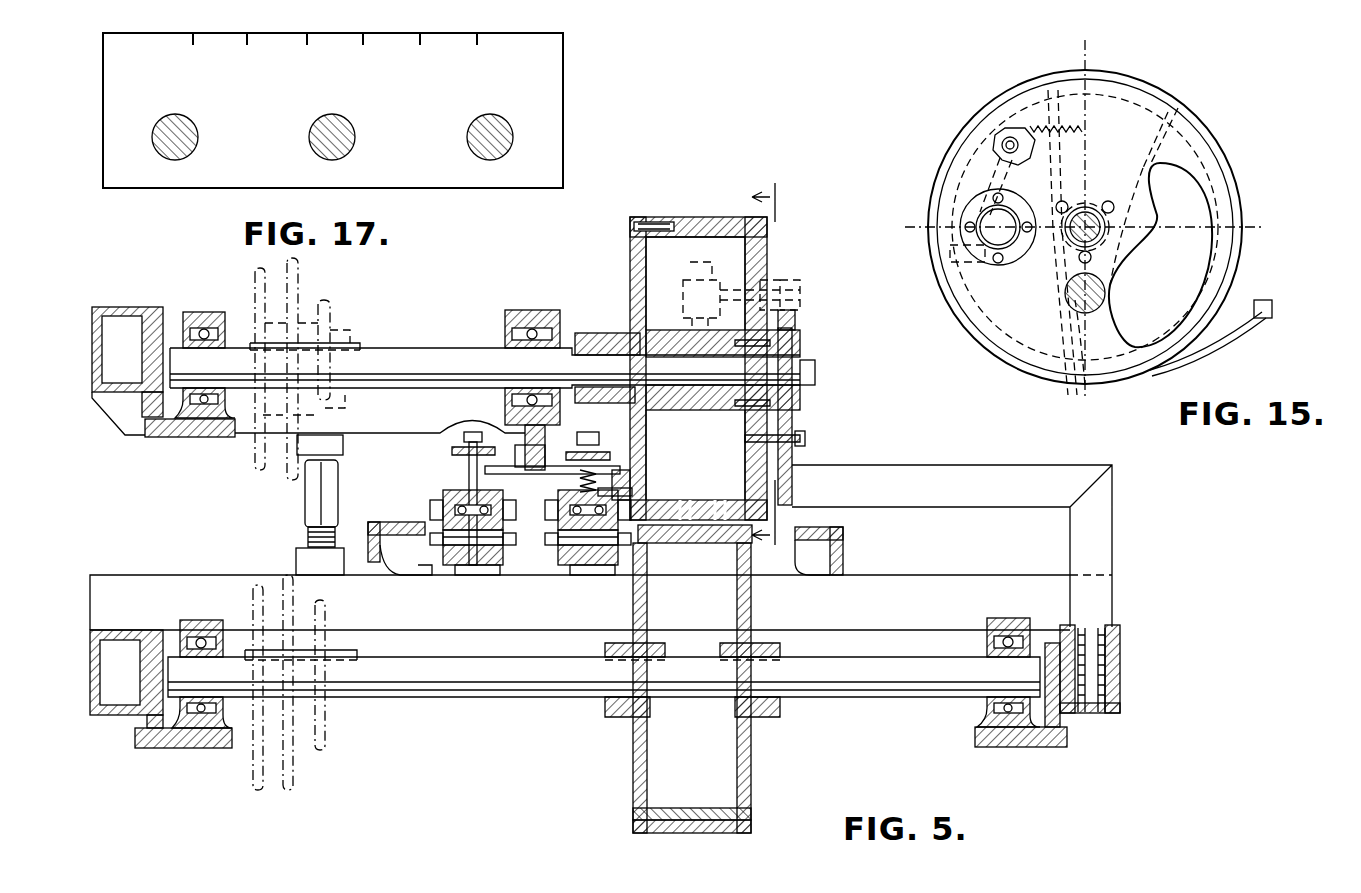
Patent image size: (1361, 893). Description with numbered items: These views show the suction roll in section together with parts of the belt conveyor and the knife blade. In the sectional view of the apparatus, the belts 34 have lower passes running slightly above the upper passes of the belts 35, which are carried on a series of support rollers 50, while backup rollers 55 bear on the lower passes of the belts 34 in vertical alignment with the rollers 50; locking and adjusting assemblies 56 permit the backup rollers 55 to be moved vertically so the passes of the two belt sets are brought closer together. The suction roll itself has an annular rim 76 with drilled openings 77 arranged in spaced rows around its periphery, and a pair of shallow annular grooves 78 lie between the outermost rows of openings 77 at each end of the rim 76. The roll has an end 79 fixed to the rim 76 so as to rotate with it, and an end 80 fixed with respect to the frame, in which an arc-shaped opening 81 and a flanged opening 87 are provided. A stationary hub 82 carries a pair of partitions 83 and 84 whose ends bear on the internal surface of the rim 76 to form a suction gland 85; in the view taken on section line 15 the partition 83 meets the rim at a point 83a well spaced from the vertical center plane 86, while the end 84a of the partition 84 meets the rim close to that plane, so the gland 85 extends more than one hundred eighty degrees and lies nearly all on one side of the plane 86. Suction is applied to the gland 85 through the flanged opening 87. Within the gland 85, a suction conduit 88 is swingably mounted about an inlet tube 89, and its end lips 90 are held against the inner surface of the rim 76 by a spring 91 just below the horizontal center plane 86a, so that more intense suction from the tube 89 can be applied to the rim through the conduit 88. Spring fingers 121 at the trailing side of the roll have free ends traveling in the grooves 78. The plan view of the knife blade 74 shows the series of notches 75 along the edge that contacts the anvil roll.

In FIG. 5, the section line 15— 15 is at (780, 371).
In FIG. 5, the belts 34 is at (572, 510).
In FIG. 5, the belts 35 is at (548, 548).
In FIG. 5, the support rollers 50 is at (625, 572).
In FIG. 5, the backup rollers 55 is at (622, 492).
In FIG. 5, the locking and adjusting assemblies 56 is at (638, 482).
In FIG. 17, the knife blade 74 is at (103, 99).
In FIG. 17, the notches 75 is at (307, 45).
In FIG. 15, the annular rim 76 is at (1205, 125).
In FIG. 5, the annular rim 76 is at (742, 217).
In FIG. 5, the drilled openings 77 is at (708, 502).
In FIG. 5, the annular grooves 78 is at (720, 215).
In FIG. 5, the end 79 is at (632, 268).
In FIG. 5, the end 80 is at (768, 255).
In FIG. 15, the opening 81 is at (1160, 255).
In FIG. 15, the stationary hub 82 is at (1091, 200).
In FIG. 5, the stationary hub 82 is at (750, 335).
In FIG. 15, the partition 83 is at (1218, 142).
In FIG. 15, the point 83a is at (1176, 110).
In FIG. 15, the partition 84 is at (1060, 305).
In FIG. 15, the end 84a is at (1070, 385).
In FIG. 15, the suction gland 85 is at (1118, 105).
In FIG. 15, the vertical center plane 86 is at (1085, 213).
In FIG. 15, the horizontal center plane 86a is at (1223, 222).
In FIG. 15, the flanged opening 87 is at (1016, 262).
In FIG. 15, the suction conduit 88 is at (1012, 185).
In FIG. 5, the suction conduit 88 is at (683, 303).
In FIG. 15, the inlet tube 89 is at (1004, 140).
In FIG. 5, the inlet tube 89 is at (790, 285).
In FIG. 15, the end lips 90 is at (932, 243).
In FIG. 15, the spring 91 is at (1050, 90).
In FIG. 15, the spring fingers 121 is at (1221, 338).